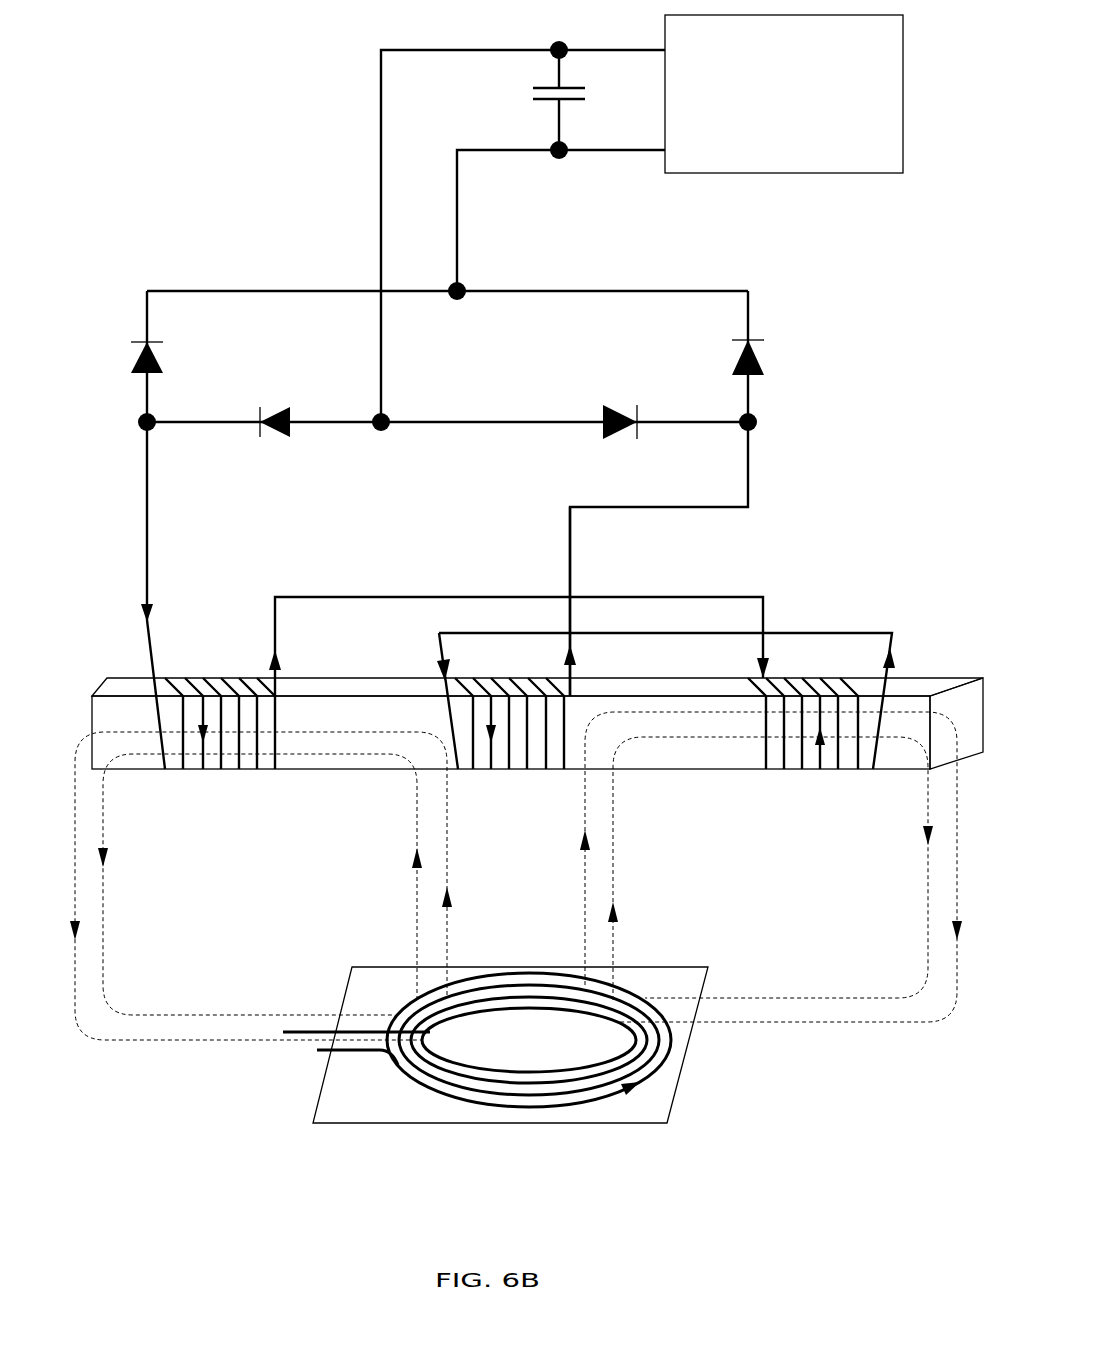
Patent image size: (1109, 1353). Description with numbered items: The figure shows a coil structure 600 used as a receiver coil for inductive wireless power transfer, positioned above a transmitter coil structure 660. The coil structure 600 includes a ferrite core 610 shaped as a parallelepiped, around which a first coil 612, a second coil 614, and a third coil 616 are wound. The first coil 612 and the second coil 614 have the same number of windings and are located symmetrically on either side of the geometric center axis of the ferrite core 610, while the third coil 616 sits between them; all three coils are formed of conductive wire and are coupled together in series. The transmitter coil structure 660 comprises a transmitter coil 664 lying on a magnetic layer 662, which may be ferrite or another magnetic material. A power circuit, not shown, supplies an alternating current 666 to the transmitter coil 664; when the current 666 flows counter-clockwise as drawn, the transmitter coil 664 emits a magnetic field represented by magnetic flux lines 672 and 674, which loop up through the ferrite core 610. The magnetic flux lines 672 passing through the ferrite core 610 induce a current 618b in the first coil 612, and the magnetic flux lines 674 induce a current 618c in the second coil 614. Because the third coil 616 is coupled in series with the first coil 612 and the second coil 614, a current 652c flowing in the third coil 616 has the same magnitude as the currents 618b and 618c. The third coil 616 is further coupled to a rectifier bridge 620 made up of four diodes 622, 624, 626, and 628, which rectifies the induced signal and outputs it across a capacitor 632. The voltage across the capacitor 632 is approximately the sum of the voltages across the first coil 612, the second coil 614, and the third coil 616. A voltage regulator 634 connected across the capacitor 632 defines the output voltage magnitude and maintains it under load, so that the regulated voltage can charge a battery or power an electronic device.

The coil structure 600 is at (827, 590).
The ferrite core 610 is at (312, 772).
The first coil 612 is at (222, 790).
The second coil 614 is at (822, 788).
The third coil 616 is at (513, 786).
The current 618b is at (268, 660).
The current 618c is at (895, 665).
The current 652c is at (578, 655).
The rectifier bridge 620 is at (305, 252).
The diode 622 is at (142, 352).
The diode 624 is at (265, 410).
The diode 626 is at (618, 412).
The diode 628 is at (758, 353).
The capacitor 632 is at (547, 100).
The voltage regulator 634 is at (822, 174).
The transmitter coil structure 660 is at (333, 1208).
The magnetic layer 662 is at (347, 1124).
The transmitter coil 664 is at (467, 1100).
The alternating current 666 is at (593, 1098).
The magnetic flux lines 672 is at (103, 945).
The magnetic flux lines 674 is at (928, 928).